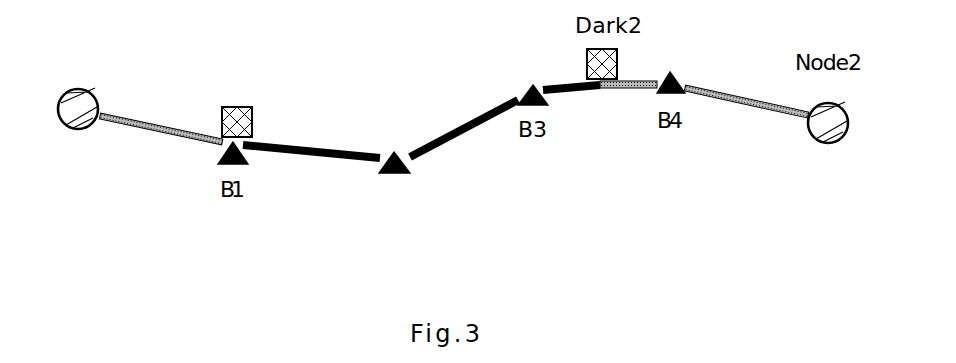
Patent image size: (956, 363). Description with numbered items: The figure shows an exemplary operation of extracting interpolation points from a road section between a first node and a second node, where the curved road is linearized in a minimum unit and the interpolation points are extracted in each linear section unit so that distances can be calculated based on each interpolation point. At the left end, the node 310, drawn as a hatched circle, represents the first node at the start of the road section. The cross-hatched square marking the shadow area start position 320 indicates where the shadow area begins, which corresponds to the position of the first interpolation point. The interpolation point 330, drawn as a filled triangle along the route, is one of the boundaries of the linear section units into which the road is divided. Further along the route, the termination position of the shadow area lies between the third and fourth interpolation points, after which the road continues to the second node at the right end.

The node 310 is at (63, 123).
The dark node (dark1) 320 is at (222, 107).
The branch point (B2) 330 is at (393, 152).